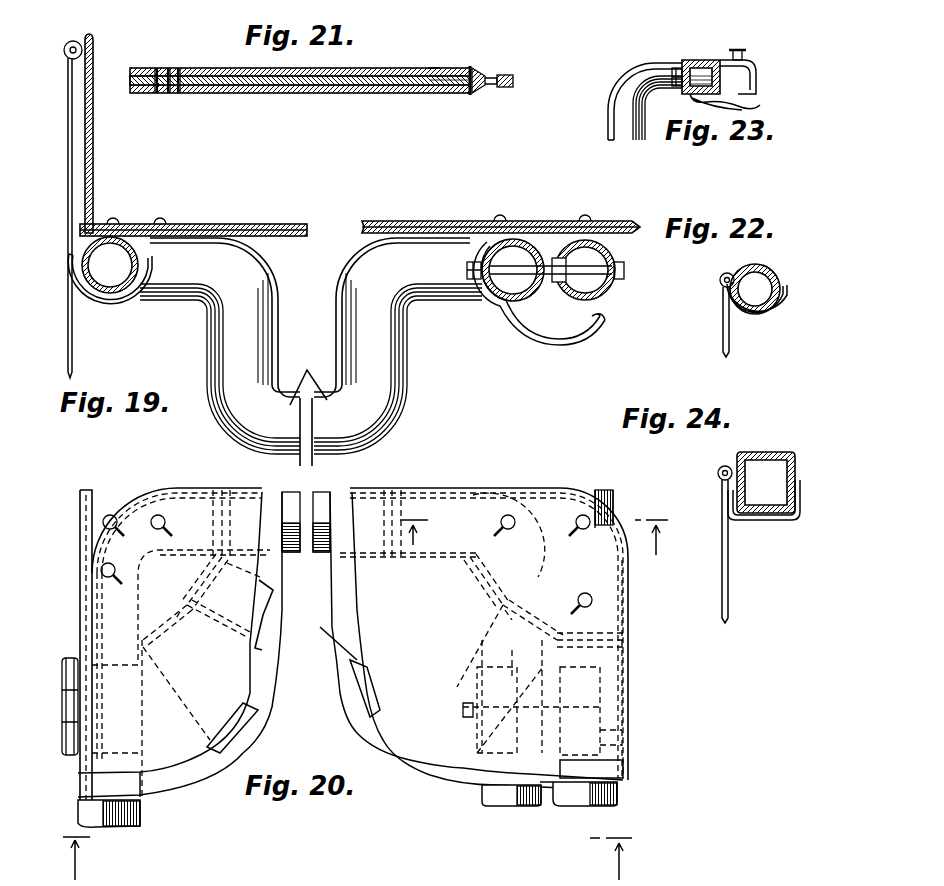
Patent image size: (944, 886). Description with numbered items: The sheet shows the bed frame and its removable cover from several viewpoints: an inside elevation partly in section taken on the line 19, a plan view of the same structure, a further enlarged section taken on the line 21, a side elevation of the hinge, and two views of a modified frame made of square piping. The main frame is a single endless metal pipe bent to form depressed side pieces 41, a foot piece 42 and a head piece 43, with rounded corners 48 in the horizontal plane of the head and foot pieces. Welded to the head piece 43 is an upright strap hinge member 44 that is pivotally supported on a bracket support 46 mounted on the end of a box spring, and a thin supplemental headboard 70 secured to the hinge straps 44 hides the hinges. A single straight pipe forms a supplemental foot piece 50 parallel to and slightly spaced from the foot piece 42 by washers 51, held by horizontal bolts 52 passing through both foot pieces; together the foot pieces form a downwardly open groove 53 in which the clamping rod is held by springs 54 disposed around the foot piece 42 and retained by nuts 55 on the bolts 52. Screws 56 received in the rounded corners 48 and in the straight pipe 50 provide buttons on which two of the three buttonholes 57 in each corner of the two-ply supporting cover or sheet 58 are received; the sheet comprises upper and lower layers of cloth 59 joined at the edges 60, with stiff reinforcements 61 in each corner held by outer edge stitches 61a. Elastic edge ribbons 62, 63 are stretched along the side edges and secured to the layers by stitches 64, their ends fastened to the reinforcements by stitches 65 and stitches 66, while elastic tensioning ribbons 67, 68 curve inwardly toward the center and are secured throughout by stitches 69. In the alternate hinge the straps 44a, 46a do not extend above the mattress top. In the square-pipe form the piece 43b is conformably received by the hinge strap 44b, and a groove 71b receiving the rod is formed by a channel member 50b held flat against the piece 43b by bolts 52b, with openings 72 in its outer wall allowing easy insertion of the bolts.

In FIG. 19, the depressed side pieces 41 is at (308, 406).
In FIG. 19, the foot piece 42 is at (503, 306).
In FIG. 20, the foot piece 42 is at (487, 796).
In FIG. 19, the head piece 43 is at (140, 261).
In FIG. 22, the head piece 43 is at (782, 283).
In FIG. 23, the head piece of square cross-section 43b is at (715, 62).
In FIG. 24, the head piece of square cross-section 43b is at (796, 470).
In FIG. 19, the upright strap hinge member 44 is at (76, 96).
In FIG. 22, the hinge strap 44a is at (770, 318).
In FIG. 24, the hinge strap 44b is at (785, 521).
In FIG. 19, the bracket support 46 is at (72, 155).
In FIG. 20, the bracket support 46 is at (77, 656).
In FIG. 22, the hinge strap (bracket support) 46a is at (731, 350).
In FIG. 24, the hinge strap (bracket support) 46a is at (729, 581).
In FIG. 19, the rounded corners 48 is at (178, 300).
In FIG. 20, the rounded corners 48 is at (186, 502).
In FIG. 19, the supplemental foot piece 50 is at (620, 268).
In FIG. 20, the supplemental foot piece 50 is at (620, 792).
In FIG. 23, the channel member 50b is at (756, 66).
In FIG. 19, the washers 51 is at (558, 258).
In FIG. 19, the horizontal bolts 52 is at (572, 268).
In FIG. 20, the horizontal bolts 52 is at (575, 706).
In FIG. 23, the bolts 52b is at (680, 68).
In FIG. 19, the downwardly open groove 53 is at (552, 333).
In FIG. 19, the springs 54 is at (590, 338).
In FIG. 20, the springs 54 is at (512, 660).
In FIG. 19, the nuts 55 is at (466, 266).
In FIG. 19, the screws 56 is at (160, 222).
In FIG. 20, the screws 56 is at (114, 564).
In FIG. 21, the buttonholes 57 is at (437, 68).
In FIG. 20, the buttonholes 57 is at (115, 516).
In FIG. 19, the removable two-ply supporting cover or sheet 58 is at (213, 215).
In FIG. 20, the removable two-ply supporting cover or sheet 58 is at (427, 480).
In FIG. 21, the layers of cloth 59 is at (225, 68).
In FIG. 20, the layers of cloth 59 is at (336, 677).
In FIG. 21, the edges 60 is at (505, 75).
In FIG. 21, the stiff reinforcements 61 is at (452, 93).
In FIG. 21, the outer edge stitches 61a is at (471, 95).
In FIG. 20, the outer edge stitches 61a is at (630, 615).
In FIG. 21, the elastic edge ribbon 62 is at (140, 74).
In FIG. 20, the elastic edge ribbon 62 is at (333, 492).
In FIG. 20, the elastic edge ribbon 63 is at (135, 785).
In FIG. 20, the stitches 64 is at (612, 738).
In FIG. 21, the stitches 65 is at (178, 70).
In FIG. 20, the stitches 65 is at (184, 606).
In FIG. 21, the stitches 66 is at (178, 93).
In FIG. 20, the stitches 66 is at (189, 610).
In FIG. 20, the elastic tensioning ribbon 67 is at (265, 620).
In FIG. 20, the elastic tensioning ribbon 68 is at (360, 737).
In FIG. 20, the stitches 69 is at (222, 665).
In FIG. 19, the supplemental headboard 70 is at (94, 133).
In FIG. 23, the groove 71b is at (745, 102).
In FIG. 23, the openings 72 is at (757, 74).
In FIG. 20, the section line 19 is at (347, 858).
In FIG. 20, the section line 21 is at (536, 527).